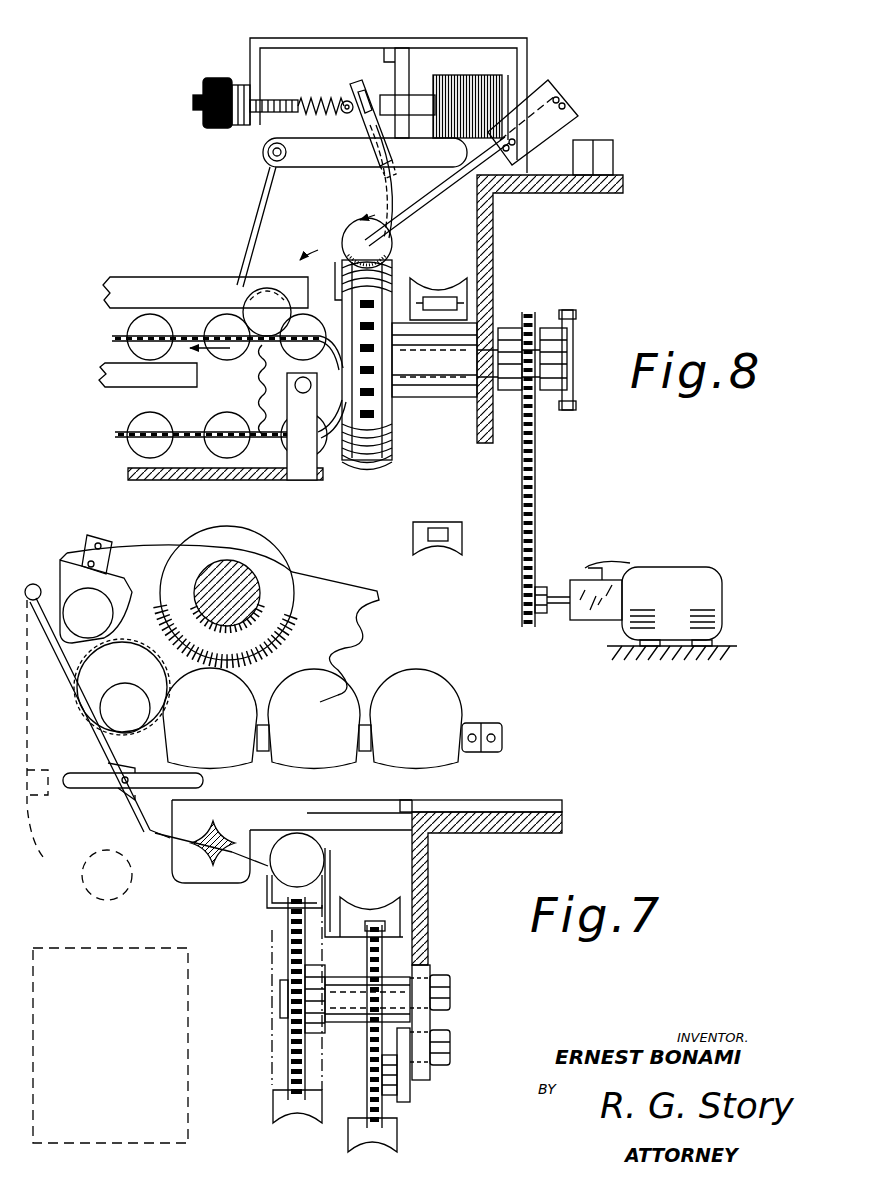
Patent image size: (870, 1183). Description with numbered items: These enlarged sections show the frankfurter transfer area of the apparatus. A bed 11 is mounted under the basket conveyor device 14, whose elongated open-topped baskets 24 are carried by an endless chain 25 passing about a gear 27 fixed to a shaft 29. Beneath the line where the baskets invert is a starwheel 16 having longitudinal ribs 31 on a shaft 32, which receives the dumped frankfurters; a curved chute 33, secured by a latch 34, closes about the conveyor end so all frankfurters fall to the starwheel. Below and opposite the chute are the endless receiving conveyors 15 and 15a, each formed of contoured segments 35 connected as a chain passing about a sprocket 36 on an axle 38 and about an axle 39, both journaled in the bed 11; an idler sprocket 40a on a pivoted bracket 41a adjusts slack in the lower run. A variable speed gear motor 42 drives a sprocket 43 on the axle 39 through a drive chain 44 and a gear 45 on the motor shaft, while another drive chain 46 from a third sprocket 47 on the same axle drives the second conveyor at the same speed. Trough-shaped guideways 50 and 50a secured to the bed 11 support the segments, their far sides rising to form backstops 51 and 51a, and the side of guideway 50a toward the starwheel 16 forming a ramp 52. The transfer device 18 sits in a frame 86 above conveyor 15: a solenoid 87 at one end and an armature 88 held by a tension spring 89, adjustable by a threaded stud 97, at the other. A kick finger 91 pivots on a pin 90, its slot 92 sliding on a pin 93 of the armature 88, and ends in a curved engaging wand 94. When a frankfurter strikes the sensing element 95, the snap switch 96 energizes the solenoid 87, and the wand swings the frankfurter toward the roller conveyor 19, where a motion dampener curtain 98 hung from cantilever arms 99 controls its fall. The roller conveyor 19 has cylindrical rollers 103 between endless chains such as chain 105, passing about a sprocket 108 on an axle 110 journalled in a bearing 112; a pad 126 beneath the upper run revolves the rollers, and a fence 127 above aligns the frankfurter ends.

In FIG. 8, the bed 11 is at (500, 236).
In FIG. 7, the bed 11 is at (440, 866).
In FIG. 7, the basket conveyor device 14 is at (65, 556).
In FIG. 8, the endless receiving conveyor 15 is at (362, 468).
In FIG. 7, the endless receiving conveyor 15 is at (268, 1092).
In FIG. 8, the endless receiving conveyor 15a is at (437, 558).
In FIG. 7, the endless receiving conveyor 15a is at (345, 1134).
In FIG. 7, the starwheel 16 is at (228, 834).
In FIG. 8, the transfer device 18 is at (247, 46).
In FIG. 8, the roller conveyor 19 is at (112, 440).
In FIG. 7, the basket 24 is at (446, 700).
In FIG. 7, the endless chain 25 is at (503, 736).
In FIG. 7, the gear 27 is at (362, 628).
In FIG. 7, the shaft 29 is at (245, 570).
In FIG. 7, the longitudinal rib 31 is at (200, 893).
In FIG. 7, the shaft 32 is at (190, 878).
In FIG. 7, the curved chute 33 is at (78, 722).
In FIG. 7, the latch 34 is at (205, 782).
In FIG. 8, the conveyor segment 35 is at (393, 450).
In FIG. 7, the conveyor segment 35 is at (278, 1110).
In FIG. 7, the sprocket 36 is at (312, 968).
In FIG. 7, the axle 38 is at (347, 1024).
In FIG. 8, the axle 39 is at (450, 395).
In FIG. 7, the idler sprocket 40a is at (372, 1088).
In FIG. 7, the bracket 41a is at (412, 1100).
In FIG. 8, the variable speed gear motor 42 is at (672, 568).
In FIG. 8, the sprocket 43 is at (505, 328).
In FIG. 8, the drive chain 44 is at (537, 484).
In FIG. 8, the gear 45 is at (542, 587).
In FIG. 8, the drive chain 46 is at (576, 312).
In FIG. 8, the sprocket 47 is at (548, 328).
In FIG. 8, the trough-shaped guideway 50 is at (338, 275).
In FIG. 7, the trough-shaped guideway 50 is at (268, 895).
In FIG. 8, the trough-shaped guideway 50a is at (418, 284).
In FIG. 7, the backstop 51 is at (330, 858).
In FIG. 7, the backstop 51a is at (371, 909).
In FIG. 7, the ramp 52 is at (331, 898).
In FIG. 8, the frame 86 is at (495, 44).
In FIG. 8, the solenoid 87 is at (470, 80).
In FIG. 8, the armature 88 is at (400, 95).
In FIG. 8, the tension spring 89 is at (322, 98).
In FIG. 8, the pin 90 is at (352, 150).
In FIG. 8, the kick finger 91 is at (365, 128).
In FIG. 8, the slot 92 is at (358, 92).
In FIG. 8, the pin 93 is at (372, 104).
In FIG. 8, the curved engaging wand 94 is at (398, 232).
In FIG. 8, the sensing element 95 is at (462, 182).
In FIG. 8, the snap switch 96 is at (555, 90).
In FIG. 8, the threaded stud 97 is at (272, 100).
In FIG. 8, the motion dampener curtain 98 is at (250, 228).
In FIG. 8, the cantilever arm 99 is at (305, 166).
In FIG. 8, the cylindrical roller 103 is at (128, 350).
In FIG. 8, the endless chain 105 is at (125, 336).
In FIG. 8, the sprocket 108 is at (258, 372).
In FIG. 8, the axle 110 is at (296, 383).
In FIG. 8, the bearing 112 is at (297, 478).
In FIG. 8, the pad 126 is at (103, 387).
In FIG. 8, the fence 127 is at (128, 277).